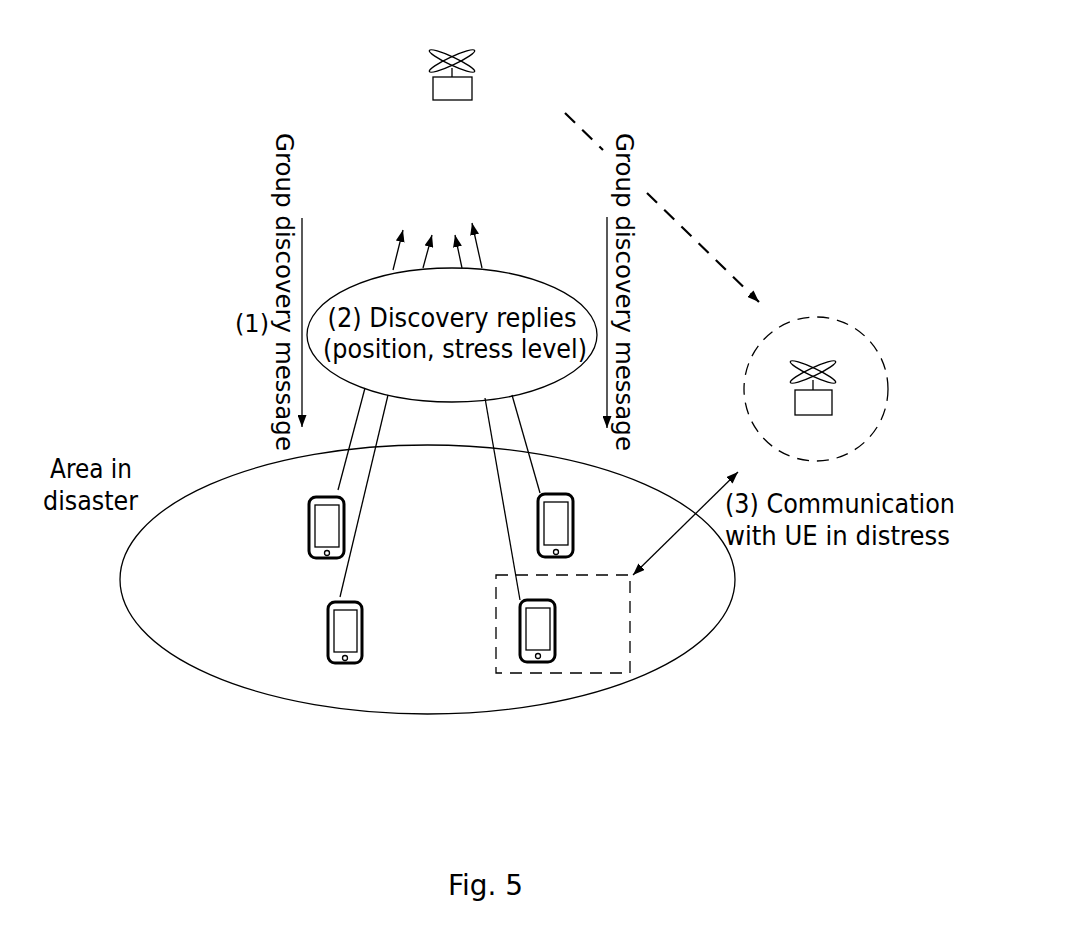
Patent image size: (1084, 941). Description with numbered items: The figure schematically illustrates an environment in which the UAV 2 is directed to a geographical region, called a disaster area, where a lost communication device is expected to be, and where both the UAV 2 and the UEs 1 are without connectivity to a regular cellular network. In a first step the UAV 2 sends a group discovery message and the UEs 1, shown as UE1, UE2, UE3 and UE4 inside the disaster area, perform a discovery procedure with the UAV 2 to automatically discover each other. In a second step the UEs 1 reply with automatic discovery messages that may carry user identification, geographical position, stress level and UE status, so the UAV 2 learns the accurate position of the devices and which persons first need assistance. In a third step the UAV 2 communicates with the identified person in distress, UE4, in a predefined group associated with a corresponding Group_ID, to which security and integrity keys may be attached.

The UE 1 is at (421, 611).
The UAV 2 is at (472, 90).
The element UE1 is at (298, 527).
The element UE2 is at (584, 525).
The element UE3 is at (316, 632).
The element UE4 is at (570, 631).